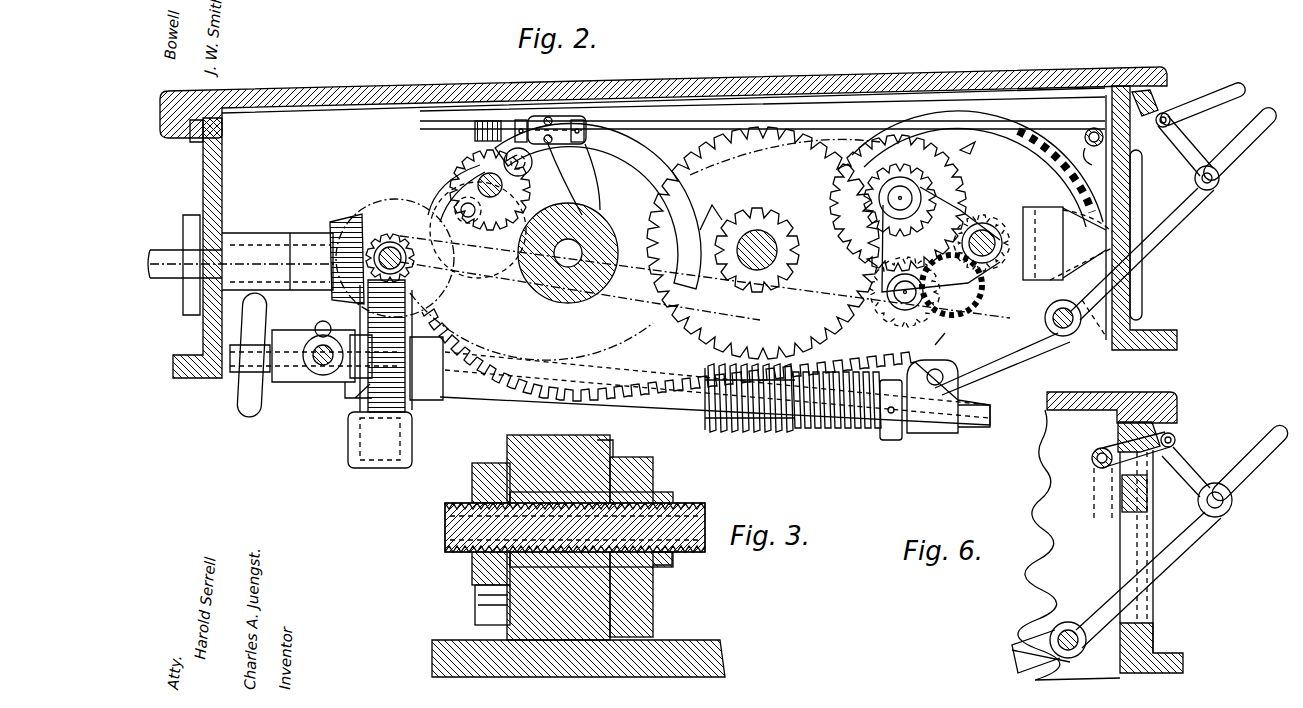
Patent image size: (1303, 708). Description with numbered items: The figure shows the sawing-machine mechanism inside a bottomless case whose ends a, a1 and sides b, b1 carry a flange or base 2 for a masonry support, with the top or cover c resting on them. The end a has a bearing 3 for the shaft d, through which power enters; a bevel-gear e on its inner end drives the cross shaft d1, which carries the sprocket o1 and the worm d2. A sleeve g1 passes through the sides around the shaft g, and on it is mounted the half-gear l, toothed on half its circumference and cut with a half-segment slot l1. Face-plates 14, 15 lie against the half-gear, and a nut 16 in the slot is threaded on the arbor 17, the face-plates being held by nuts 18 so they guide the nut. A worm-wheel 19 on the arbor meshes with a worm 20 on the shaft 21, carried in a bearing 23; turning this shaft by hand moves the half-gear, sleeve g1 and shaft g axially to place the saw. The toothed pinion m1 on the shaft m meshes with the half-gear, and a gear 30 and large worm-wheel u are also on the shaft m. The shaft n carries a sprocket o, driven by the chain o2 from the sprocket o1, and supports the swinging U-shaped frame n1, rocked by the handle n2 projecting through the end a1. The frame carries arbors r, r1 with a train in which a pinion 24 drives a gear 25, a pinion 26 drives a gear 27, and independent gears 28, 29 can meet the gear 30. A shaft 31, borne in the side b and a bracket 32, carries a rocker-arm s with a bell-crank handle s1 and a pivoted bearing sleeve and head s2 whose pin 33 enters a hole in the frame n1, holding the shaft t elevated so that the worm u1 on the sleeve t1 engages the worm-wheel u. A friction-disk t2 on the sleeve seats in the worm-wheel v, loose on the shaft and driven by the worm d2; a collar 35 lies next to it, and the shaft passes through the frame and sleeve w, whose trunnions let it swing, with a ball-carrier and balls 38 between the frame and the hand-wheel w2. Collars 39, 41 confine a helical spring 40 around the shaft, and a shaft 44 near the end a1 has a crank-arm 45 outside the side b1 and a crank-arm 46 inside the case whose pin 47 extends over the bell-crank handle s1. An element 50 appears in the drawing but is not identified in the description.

In FIG. 2, the end of the case a is at (203, 186).
In FIG. 2, the end of the case a1 is at (1140, 320).
In FIG. 6, the end of the case a1 is at (1152, 640).
In FIG. 2, the side of the case b is at (982, 426).
In FIG. 2, the side of the case b1 is at (289, 151).
In FIG. 6, the side of the case b1 is at (1035, 545).
In FIG. 2, the top or cover c is at (396, 90).
In FIG. 2, the shaft d is at (176, 256).
In FIG. 2, the shaft d1 is at (383, 214).
In FIG. 2, the worm d2 is at (390, 241).
In FIG. 2, the bevel-gear e is at (342, 222).
In FIG. 2, the shaft g is at (590, 236).
In FIG. 2, the sleeve g1 is at (604, 286).
In FIG. 3, the sleeve g1 is at (692, 640).
In FIG. 2, the half-gear l is at (705, 289).
In FIG. 3, the half-gear l is at (586, 446).
In FIG. 2, the half-segment slot l1 is at (610, 152).
In FIG. 3, the half-segment slot l1 is at (525, 437).
In FIG. 2, the shaft m is at (762, 230).
In FIG. 2, the long toothed pinion m1 is at (792, 240).
In FIG. 2, the shaft n is at (984, 232).
In FIG. 2, the swinging U-shaped frame n1 is at (1028, 214).
In FIG. 2, the handle n2 is at (1220, 118).
In FIG. 2, the sprocket o is at (1037, 140).
In FIG. 2, the sprocket o1 is at (476, 230).
In FIG. 2, the chain o2 is at (752, 178).
In FIG. 2, the arbor r is at (899, 243).
In FIG. 2, the arbor r1 is at (896, 328).
In FIG. 2, the rocker-arm s is at (1160, 250).
In FIG. 6, the rocker-arm s is at (1106, 592).
In FIG. 2, the bell-crank handle s1 is at (1237, 147).
In FIG. 6, the bell-crank handle s1 is at (1262, 445).
In FIG. 2, the bearing sleeve and head s2 is at (945, 432).
In FIG. 2, the shaft t is at (452, 402).
In FIG. 2, the sleeve t1 is at (668, 416).
In FIG. 2, the friction-disk t2 is at (404, 354).
In FIG. 2, the worm-wheel u is at (763, 243).
In FIG. 2, the worm u1 is at (736, 432).
In FIG. 2, the worm-wheel v is at (352, 412).
In FIG. 2, the frame and sleeve w is at (272, 354).
In FIG. 2, the hand-wheel w2 is at (314, 385).
In FIG. 2, the flange or base 2 is at (192, 356).
In FIG. 6, the flange or base 2 is at (1156, 561).
In FIG. 2, the bearing 3 is at (256, 233).
In FIG. 2, the face-plate 14 is at (503, 256).
In FIG. 3, the face-plate 14 is at (472, 590).
In FIG. 2, the face-plate 15 is at (517, 295).
In FIG. 3, the face-plate 15 is at (653, 590).
In FIG. 2, the nut 16 is at (562, 173).
In FIG. 3, the nut 16 is at (475, 612).
In FIG. 2, the threaded arbor 17 is at (478, 180).
In FIG. 3, the threaded arbor 17 is at (446, 530).
In FIG. 2, the nuts 18 is at (456, 210).
In FIG. 3, the nuts 18 is at (673, 555).
In FIG. 2, the worm-wheel 19 is at (482, 150).
In FIG. 2, the worm 20 is at (486, 119).
In FIG. 2, the shaft 21 is at (925, 128).
In FIG. 2, the bearing 23 is at (553, 112).
In FIG. 2, the pinion 24 is at (1000, 286).
In FIG. 2, the gear 25 is at (950, 172).
In FIG. 2, the pinion 26 is at (893, 180).
In FIG. 2, the gear 27 is at (952, 285).
In FIG. 2, the gear 28 is at (900, 190).
In FIG. 2, the gear 29 is at (892, 318).
In FIG. 2, the gear 30 is at (771, 348).
In FIG. 2, the shaft 31 is at (1070, 330).
In FIG. 6, the shaft 31 is at (1060, 624).
In FIG. 2, the bracket 32 is at (1103, 325).
In FIG. 2, the pin 33 is at (945, 346).
In FIG. 2, the collar 35 is at (345, 406).
In FIG. 2, the ball-carrier and balls 38 is at (270, 385).
In FIG. 2, the collar 39 is at (790, 434).
In FIG. 2, the helical spring 40 is at (838, 430).
In FIG. 2, the collar 41 is at (892, 441).
In FIG. 2, the shaft 44 is at (1090, 128).
In FIG. 2, the crank-arm 45 is at (1085, 150).
In FIG. 6, the crank-arm 45 is at (1094, 492).
In FIG. 2, the crank-arm 46 is at (1175, 135).
In FIG. 6, the crank-arm 46 is at (1160, 465).
In FIG. 2, the pin 47 is at (1170, 122).
In FIG. 6, the pin 47 is at (1178, 440).
In FIG. 2, the rack guide block 50 is at (398, 452).